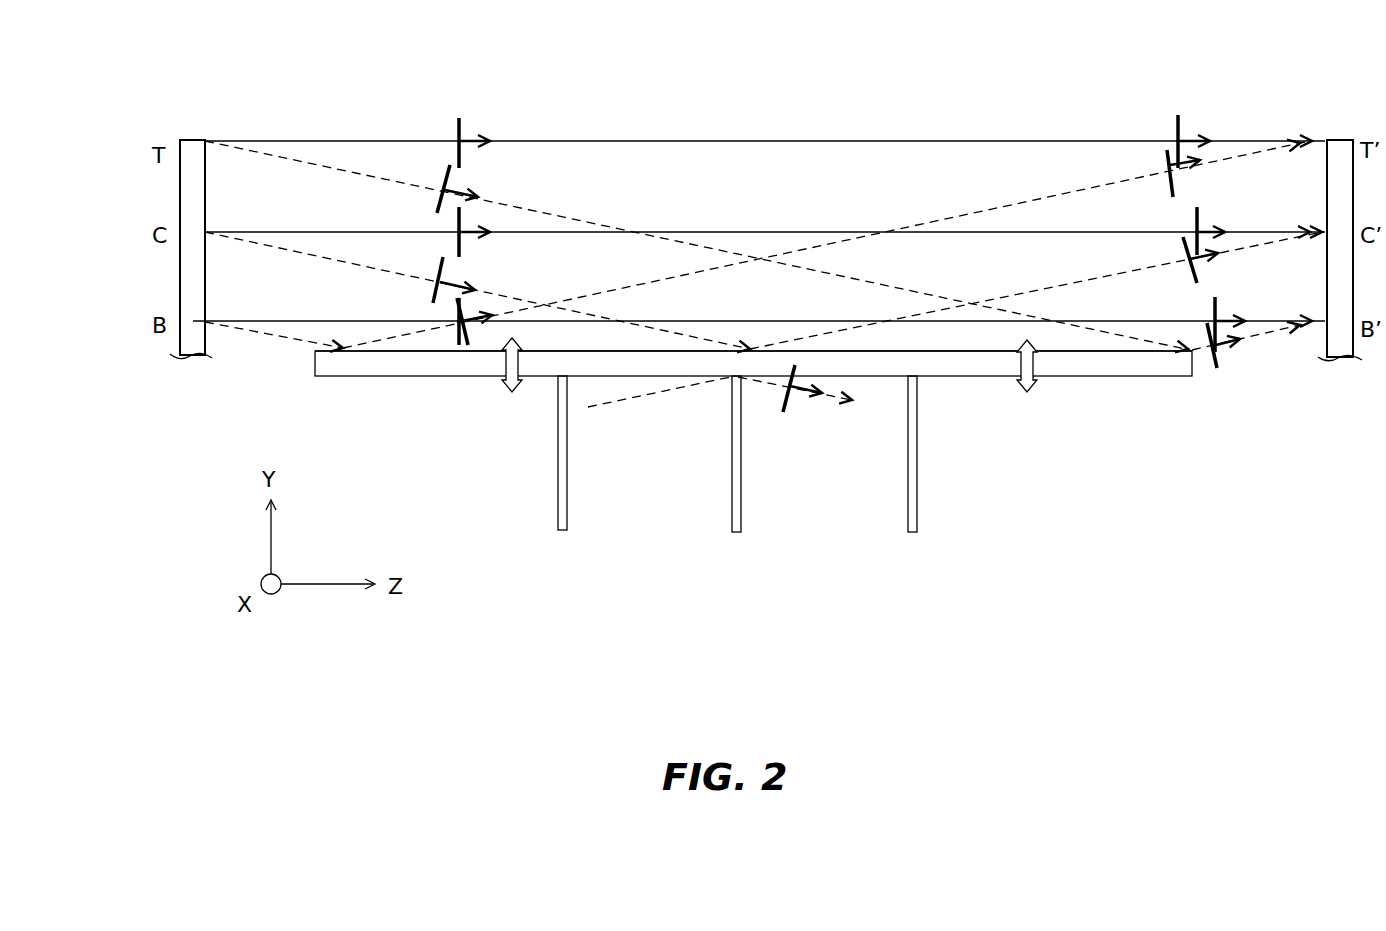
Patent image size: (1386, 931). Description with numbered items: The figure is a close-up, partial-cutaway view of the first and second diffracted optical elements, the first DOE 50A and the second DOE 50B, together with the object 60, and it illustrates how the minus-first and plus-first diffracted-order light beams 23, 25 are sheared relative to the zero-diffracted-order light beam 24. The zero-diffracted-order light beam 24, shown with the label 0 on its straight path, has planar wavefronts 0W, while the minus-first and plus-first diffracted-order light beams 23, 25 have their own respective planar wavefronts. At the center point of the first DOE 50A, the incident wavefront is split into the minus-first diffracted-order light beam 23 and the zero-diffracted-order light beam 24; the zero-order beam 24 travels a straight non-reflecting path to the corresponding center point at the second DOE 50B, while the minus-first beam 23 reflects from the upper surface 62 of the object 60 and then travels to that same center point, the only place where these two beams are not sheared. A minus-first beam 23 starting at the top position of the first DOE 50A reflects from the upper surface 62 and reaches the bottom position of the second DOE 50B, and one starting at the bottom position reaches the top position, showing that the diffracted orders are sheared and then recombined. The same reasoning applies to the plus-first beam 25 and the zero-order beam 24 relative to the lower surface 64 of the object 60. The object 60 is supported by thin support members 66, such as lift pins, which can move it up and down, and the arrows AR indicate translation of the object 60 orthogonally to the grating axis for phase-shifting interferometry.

The zeroth-order light path 0 is at (520, 141).
The -1st diffracted-order light beam 23 is at (310, 163).
The zero-diffracted-order light beam 24 is at (685, 232).
The +1st diffracted-order light beam 25 is at (631, 397).
The first DOE 50A is at (192, 150).
The second DOE 50B is at (1340, 150).
The object 60 is at (695, 388).
The upper surface 62 is at (412, 345).
The lower surface 64 is at (393, 376).
The support members 66 is at (908, 480).
The arrows AR is at (512, 394).
The planar wavefronts 0W is at (462, 118).